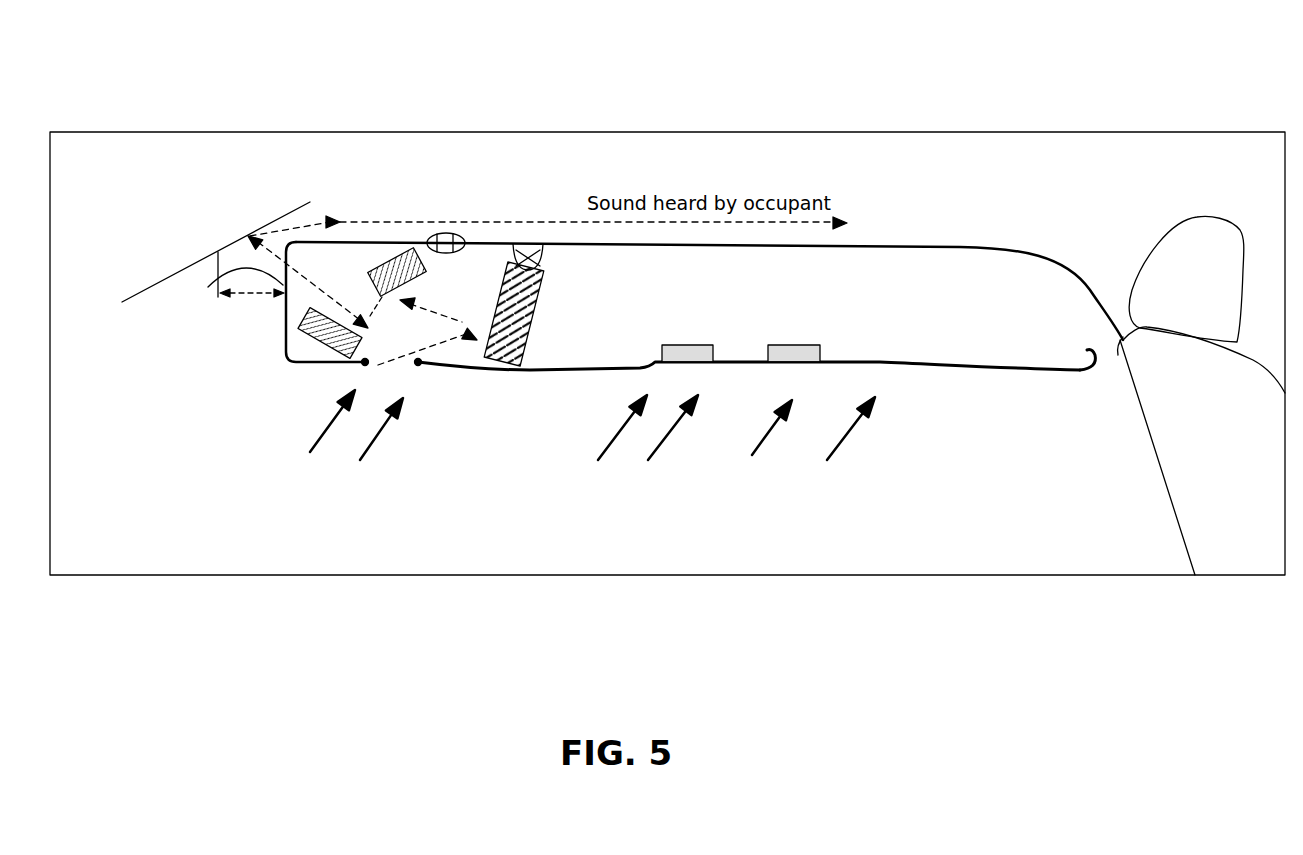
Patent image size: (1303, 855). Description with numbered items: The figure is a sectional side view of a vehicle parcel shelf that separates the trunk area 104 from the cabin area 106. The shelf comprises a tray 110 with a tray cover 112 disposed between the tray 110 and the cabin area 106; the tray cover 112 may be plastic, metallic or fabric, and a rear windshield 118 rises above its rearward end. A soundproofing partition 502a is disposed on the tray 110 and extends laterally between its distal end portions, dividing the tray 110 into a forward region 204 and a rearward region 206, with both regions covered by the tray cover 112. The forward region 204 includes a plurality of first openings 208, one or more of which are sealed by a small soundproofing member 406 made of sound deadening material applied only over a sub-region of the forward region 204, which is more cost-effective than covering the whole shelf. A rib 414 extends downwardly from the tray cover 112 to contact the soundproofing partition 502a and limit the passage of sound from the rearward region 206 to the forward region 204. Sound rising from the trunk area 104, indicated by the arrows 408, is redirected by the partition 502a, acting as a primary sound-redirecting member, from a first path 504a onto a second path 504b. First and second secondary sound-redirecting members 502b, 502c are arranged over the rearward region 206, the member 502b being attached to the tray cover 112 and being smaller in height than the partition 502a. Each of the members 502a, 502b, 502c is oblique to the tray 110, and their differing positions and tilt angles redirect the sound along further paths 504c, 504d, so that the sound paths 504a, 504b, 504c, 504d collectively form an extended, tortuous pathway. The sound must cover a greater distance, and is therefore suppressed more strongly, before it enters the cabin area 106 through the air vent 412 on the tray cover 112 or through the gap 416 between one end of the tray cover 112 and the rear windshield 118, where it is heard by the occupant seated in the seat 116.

The trunk area 104 is at (652, 518).
The cabin area 106 is at (730, 167).
The tray 110 is at (975, 365).
The tray cover 112 is at (965, 248).
The seat 116 is at (1205, 217).
The rear windshield 118 is at (282, 218).
The forward region 204 is at (588, 369).
The rearward region 206 is at (325, 365).
The first openings 208 is at (793, 365).
The soundproofing member 406 is at (790, 348).
The sound waves from floor 408 is at (845, 446).
The air vent 412 is at (458, 237).
The rib 414 is at (543, 258).
The gap 416 is at (243, 291).
The soundproofing partition 502a is at (532, 336).
The first sound-redirecting member 502b is at (410, 248).
The second sound-redirecting member 502c is at (306, 344).
The first path 504a is at (444, 340).
The second path 504b is at (455, 308).
The sound path 504c is at (377, 303).
The sound path 504d is at (300, 290).